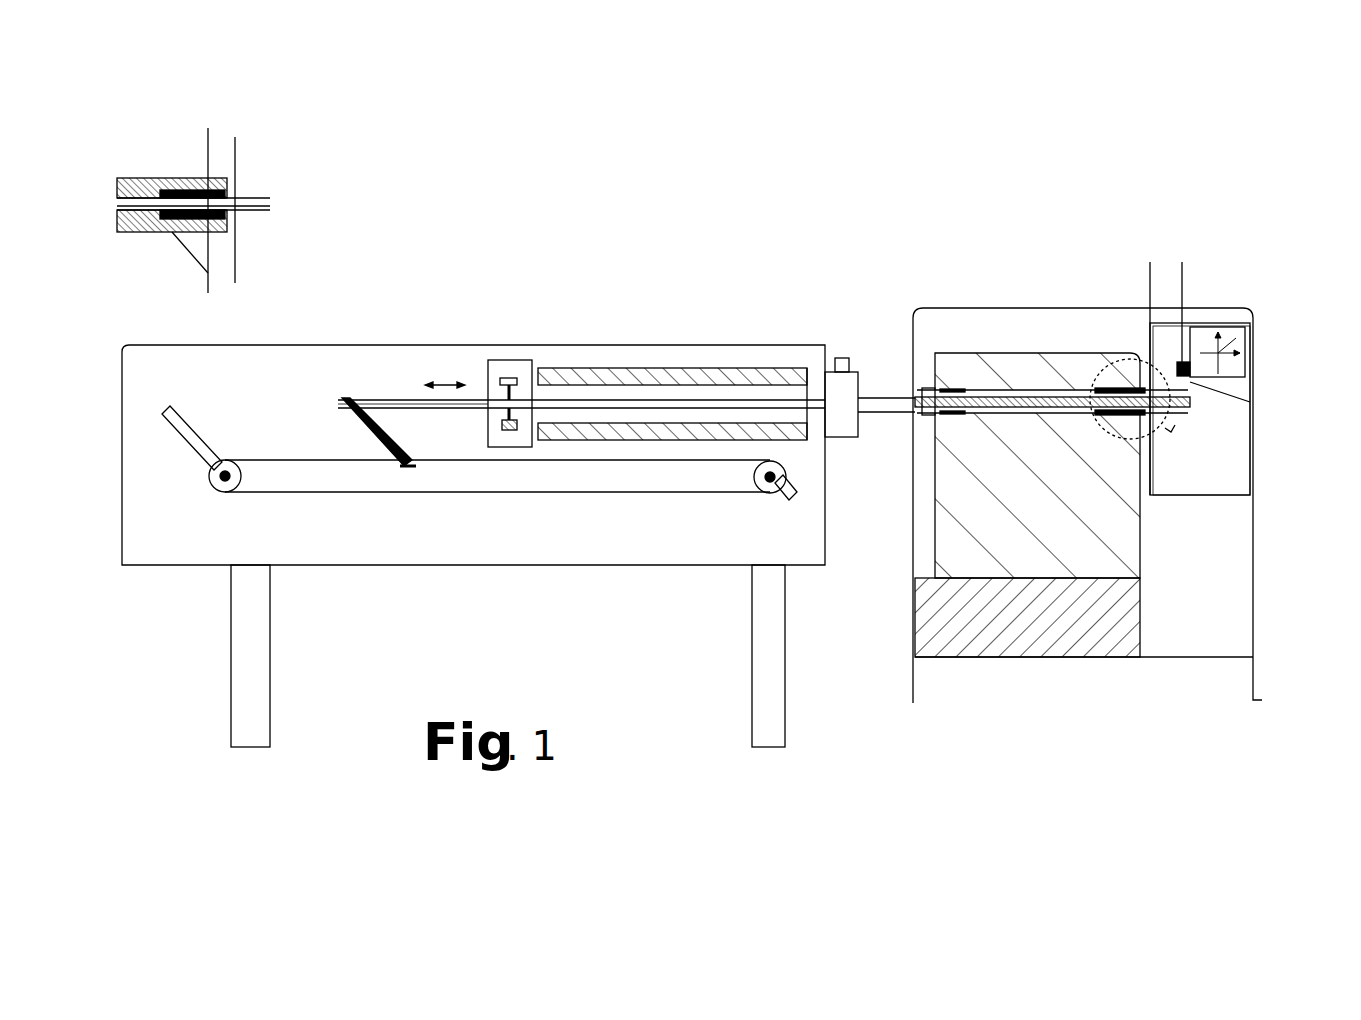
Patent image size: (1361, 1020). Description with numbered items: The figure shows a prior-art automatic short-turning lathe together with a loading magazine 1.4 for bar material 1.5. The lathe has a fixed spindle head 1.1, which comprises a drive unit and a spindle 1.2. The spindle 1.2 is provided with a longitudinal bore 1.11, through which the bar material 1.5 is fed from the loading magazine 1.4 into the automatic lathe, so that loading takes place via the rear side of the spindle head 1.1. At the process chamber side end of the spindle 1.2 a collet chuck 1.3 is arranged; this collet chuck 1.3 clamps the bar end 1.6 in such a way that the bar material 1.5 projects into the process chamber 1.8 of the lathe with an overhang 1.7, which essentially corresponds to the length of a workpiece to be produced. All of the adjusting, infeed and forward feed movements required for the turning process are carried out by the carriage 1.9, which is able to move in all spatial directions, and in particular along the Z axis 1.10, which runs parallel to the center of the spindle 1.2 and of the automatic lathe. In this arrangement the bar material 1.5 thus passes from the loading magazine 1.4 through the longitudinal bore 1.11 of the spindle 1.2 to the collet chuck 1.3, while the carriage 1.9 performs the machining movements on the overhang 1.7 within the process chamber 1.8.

The fixed spindle head 1.1 is at (958, 353).
The spindle 1.2 is at (985, 389).
The collet chuck 1.3 is at (237, 233).
The loading magazine 1.4 is at (540, 520).
The bar material 1.5 is at (760, 368).
The bar end 1.6 is at (1200, 403).
The overhang 1.7 is at (1182, 262).
The process chamber 1.8 is at (1215, 430).
The carriage 1.9 is at (1190, 378).
The Z axis 1.10 is at (1255, 332).
The longitudinal bore 1.11 is at (1035, 388).